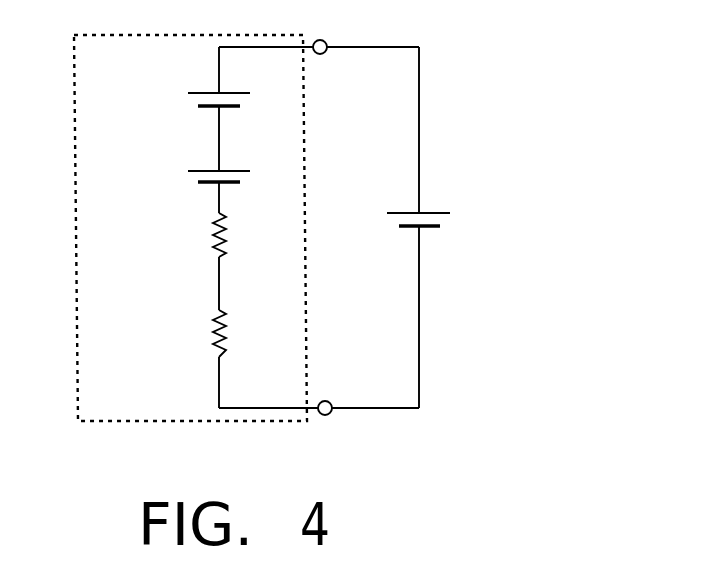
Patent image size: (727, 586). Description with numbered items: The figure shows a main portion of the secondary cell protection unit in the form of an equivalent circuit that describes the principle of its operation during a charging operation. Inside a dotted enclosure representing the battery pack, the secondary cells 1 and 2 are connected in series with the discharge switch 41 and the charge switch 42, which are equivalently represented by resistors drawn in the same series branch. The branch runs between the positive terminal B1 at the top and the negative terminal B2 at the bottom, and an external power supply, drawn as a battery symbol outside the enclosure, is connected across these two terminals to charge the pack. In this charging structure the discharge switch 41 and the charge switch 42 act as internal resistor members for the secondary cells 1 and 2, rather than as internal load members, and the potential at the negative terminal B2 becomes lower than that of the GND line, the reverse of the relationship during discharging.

The secondary cell 1 is at (208, 93).
The secondary cell 2 is at (208, 171).
The discharge switch 41 is at (216, 241).
The charge switch 42 is at (216, 342).
The positive terminal B1 is at (319, 64).
The negative terminal B2 is at (327, 390).